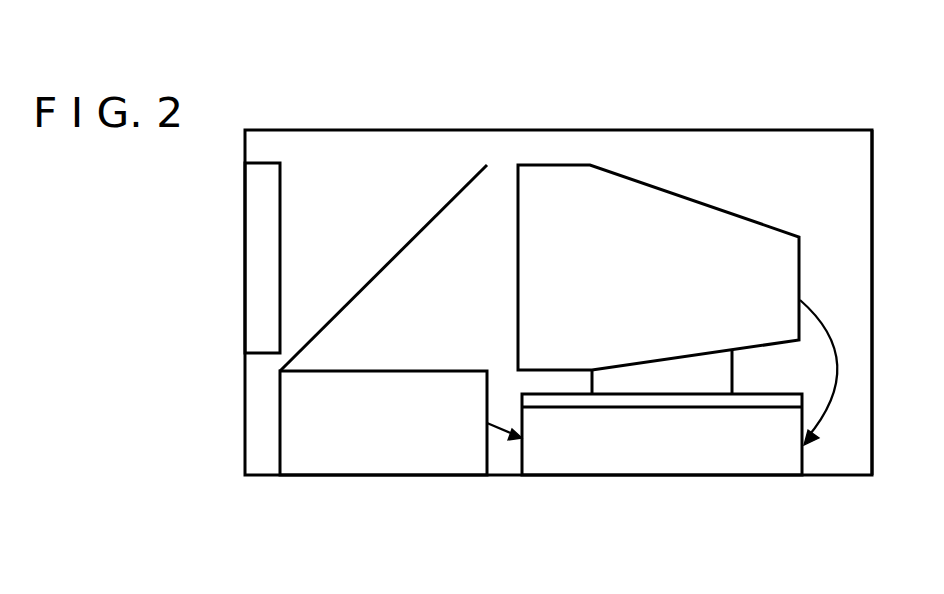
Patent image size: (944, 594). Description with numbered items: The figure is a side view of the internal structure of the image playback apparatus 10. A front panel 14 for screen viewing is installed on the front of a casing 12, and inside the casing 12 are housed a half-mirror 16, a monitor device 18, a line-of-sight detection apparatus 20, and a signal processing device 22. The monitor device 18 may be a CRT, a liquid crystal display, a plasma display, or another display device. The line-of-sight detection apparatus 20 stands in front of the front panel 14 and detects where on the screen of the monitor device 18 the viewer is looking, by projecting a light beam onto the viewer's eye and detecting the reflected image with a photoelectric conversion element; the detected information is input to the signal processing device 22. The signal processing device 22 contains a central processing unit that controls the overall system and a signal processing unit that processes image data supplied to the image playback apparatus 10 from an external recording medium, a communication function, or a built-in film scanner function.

The image playback apparatus 10 is at (373, 128).
The casing 12 is at (785, 130).
The front panel 14 is at (258, 228).
The half-mirror 16 is at (462, 190).
The monitor device 18 is at (610, 192).
The line-of-sight detection apparatus 20 is at (403, 453).
The signal processing device 22 is at (648, 458).